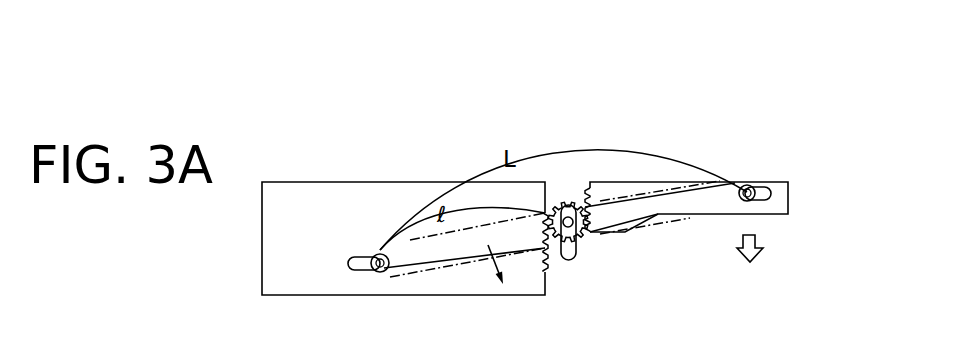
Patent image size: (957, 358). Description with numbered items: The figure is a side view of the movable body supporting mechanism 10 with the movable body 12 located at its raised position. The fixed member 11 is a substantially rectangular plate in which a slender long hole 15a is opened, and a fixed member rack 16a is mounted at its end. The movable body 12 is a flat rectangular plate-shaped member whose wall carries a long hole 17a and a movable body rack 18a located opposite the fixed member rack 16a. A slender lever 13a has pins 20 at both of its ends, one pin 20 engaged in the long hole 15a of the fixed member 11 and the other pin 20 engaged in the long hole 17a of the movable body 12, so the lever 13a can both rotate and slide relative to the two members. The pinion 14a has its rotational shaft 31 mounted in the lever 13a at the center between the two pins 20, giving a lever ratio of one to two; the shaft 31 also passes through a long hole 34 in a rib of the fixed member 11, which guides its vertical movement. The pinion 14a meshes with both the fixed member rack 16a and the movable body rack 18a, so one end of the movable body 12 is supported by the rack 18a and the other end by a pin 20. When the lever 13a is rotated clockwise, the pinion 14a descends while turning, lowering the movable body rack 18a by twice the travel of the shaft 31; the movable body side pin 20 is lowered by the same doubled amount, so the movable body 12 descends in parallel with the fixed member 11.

The movable body supporting mechanism 10 is at (528, 86).
The fixed member 11 is at (362, 197).
The movable body 12 is at (637, 190).
The lever 13a is at (480, 237).
The pinion 14a is at (560, 200).
The long hole 15a is at (365, 262).
The fixed member rack 16a is at (545, 272).
The long hole 17a is at (770, 190).
The movable body rack 18a is at (577, 193).
The pin 20 is at (747, 184).
The rotational shaft 31 is at (590, 233).
The long hole 34 is at (577, 257).